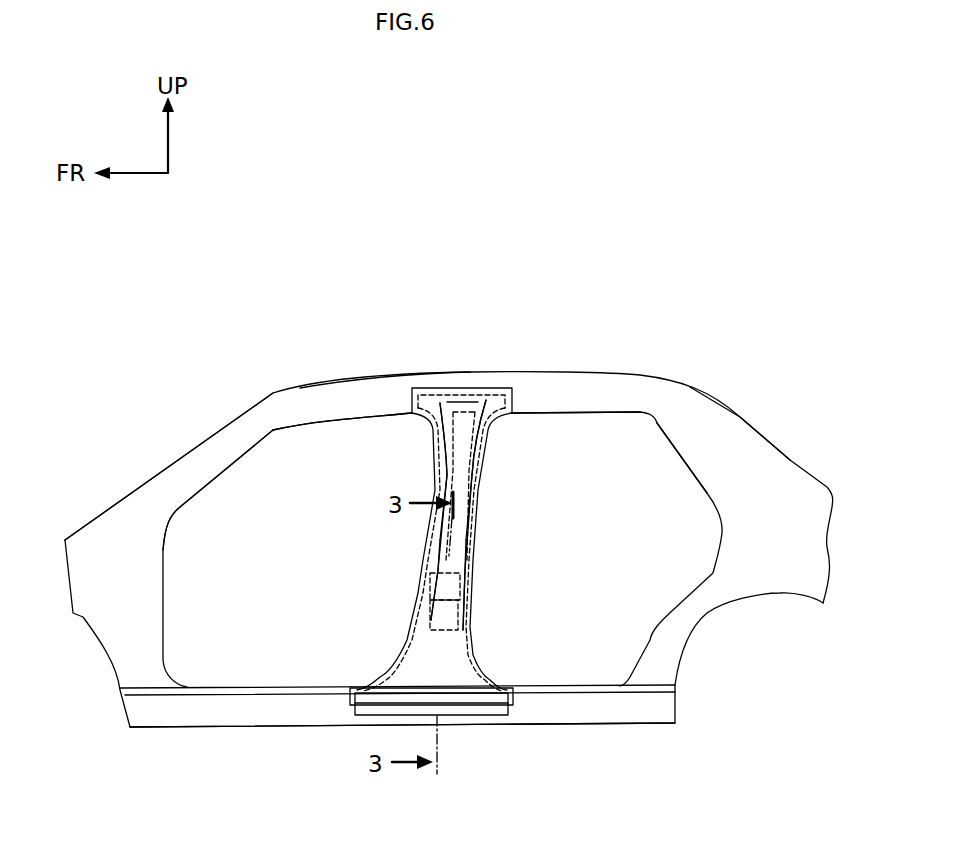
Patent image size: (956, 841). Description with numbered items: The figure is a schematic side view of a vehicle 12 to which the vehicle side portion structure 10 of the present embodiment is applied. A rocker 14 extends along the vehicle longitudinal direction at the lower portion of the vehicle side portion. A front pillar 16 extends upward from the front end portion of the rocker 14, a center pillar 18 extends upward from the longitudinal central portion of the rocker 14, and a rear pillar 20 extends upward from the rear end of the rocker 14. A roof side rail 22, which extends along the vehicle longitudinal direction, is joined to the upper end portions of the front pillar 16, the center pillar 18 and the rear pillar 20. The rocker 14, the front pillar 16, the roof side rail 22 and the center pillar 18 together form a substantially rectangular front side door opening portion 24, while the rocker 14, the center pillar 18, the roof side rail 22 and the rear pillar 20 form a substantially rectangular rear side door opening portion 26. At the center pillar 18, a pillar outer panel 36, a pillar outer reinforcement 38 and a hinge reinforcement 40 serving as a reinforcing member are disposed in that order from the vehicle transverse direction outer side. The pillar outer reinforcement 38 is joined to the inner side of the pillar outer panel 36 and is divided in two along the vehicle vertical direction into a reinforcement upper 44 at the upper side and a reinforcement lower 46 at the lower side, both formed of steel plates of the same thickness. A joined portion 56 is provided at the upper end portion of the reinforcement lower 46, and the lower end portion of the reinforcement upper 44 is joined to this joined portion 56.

The vehicle side portion structure 10 is at (500, 595).
The vehicle 12 is at (596, 318).
The rocker 14 is at (577, 720).
The front pillar 16 is at (185, 465).
The center pillar 18 is at (482, 492).
The rear pillar 20 is at (740, 427).
The roof side rail 22 is at (358, 392).
The front side door opening portion 24 is at (313, 565).
The rear side door opening portion 26 is at (631, 565).
The pillar outer panel 36 is at (490, 675).
The pillar outer reinforcement 38 is at (458, 515).
The hinge reinforcement 40 is at (425, 610).
The reinforcement upper 44 is at (478, 516).
The reinforcement lower 46 is at (476, 633).
The joined portion 56 is at (470, 580).